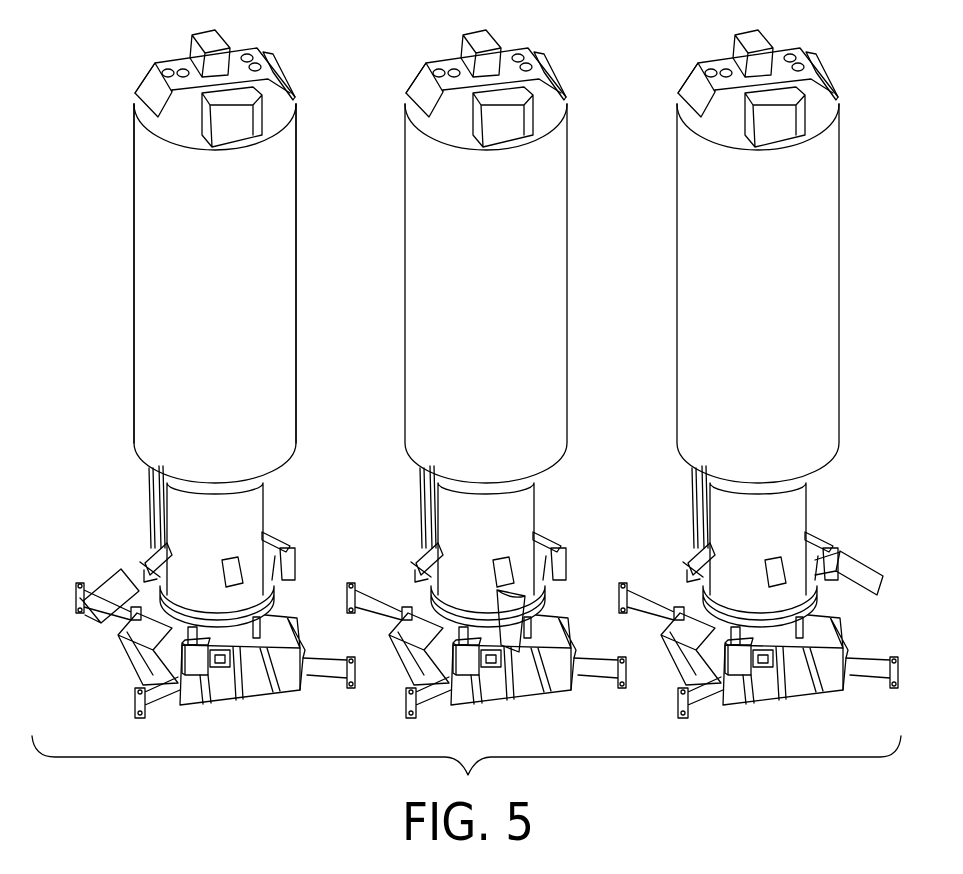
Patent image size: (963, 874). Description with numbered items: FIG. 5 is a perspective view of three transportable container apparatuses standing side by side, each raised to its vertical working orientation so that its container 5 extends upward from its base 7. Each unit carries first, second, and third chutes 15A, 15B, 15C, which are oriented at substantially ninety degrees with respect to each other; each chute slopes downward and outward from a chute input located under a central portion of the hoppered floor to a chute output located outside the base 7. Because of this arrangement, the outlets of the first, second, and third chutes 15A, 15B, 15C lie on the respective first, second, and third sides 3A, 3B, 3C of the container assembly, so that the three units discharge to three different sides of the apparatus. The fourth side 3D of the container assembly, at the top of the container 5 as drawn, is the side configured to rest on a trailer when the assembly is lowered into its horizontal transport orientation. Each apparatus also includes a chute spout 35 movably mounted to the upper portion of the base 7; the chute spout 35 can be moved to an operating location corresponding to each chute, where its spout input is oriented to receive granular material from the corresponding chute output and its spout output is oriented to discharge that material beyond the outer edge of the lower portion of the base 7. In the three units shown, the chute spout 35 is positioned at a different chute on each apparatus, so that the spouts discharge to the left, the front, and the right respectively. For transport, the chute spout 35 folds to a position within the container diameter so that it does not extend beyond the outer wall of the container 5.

The first side 3A is at (134, 414).
The second side 3B is at (232, 485).
The third side 3C is at (298, 416).
The fourth side 3D is at (178, 58).
The container 5 is at (134, 222).
The base 7 is at (158, 512).
The first chute 15A is at (147, 560).
The second chute 15B is at (218, 568).
The third chute 15C is at (278, 537).
The chute spout 35 is at (97, 590).